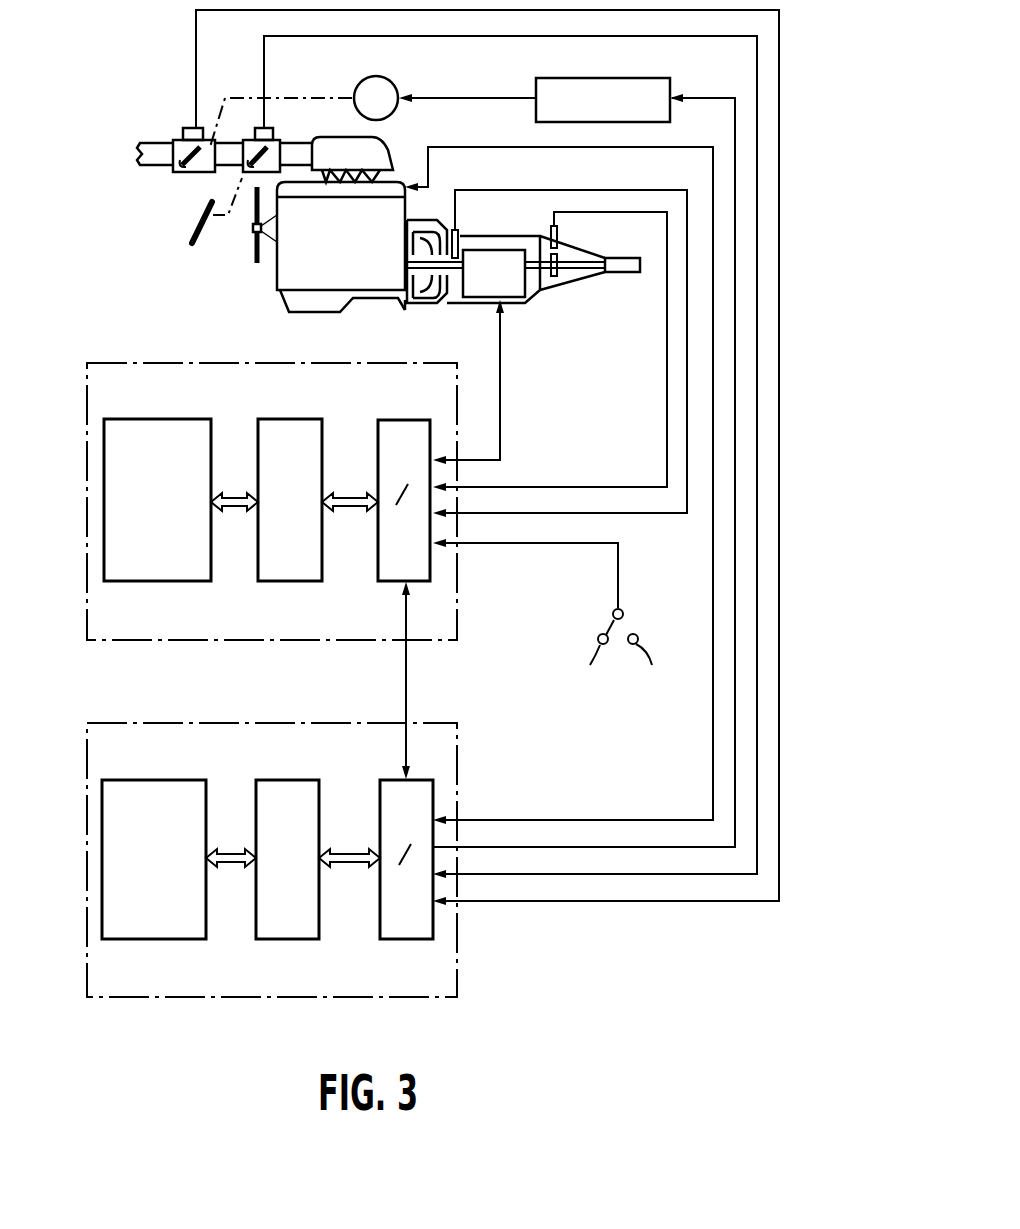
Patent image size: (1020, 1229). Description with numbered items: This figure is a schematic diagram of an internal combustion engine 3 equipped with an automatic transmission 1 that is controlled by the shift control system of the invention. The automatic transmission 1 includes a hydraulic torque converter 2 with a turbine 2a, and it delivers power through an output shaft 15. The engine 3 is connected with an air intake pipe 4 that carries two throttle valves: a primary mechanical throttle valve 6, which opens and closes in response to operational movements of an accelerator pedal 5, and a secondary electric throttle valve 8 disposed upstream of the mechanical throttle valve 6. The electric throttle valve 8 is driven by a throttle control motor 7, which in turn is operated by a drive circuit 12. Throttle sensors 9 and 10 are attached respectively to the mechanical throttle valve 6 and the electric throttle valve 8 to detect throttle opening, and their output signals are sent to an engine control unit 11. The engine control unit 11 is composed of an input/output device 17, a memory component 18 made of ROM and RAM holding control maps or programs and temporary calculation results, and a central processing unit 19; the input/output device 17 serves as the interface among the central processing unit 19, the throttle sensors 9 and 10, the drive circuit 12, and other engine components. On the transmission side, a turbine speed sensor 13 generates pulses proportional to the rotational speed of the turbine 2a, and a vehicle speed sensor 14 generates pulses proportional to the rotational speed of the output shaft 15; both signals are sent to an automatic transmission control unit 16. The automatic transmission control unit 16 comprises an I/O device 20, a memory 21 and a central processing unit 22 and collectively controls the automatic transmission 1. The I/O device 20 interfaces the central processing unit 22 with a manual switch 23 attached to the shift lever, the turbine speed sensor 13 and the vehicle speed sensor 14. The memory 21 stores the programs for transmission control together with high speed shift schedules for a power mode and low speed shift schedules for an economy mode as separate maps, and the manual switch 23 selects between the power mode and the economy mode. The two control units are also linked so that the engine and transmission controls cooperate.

The automatic transmission 1 is at (540, 308).
The hydraulic torque converter 2 is at (425, 306).
The turbine 2a is at (405, 308).
The internal combustion engine 3 is at (277, 275).
The air intake pipe 4 is at (160, 143).
The accelerator pedal 5 is at (182, 235).
The mechanical throttle valve 6 is at (245, 178).
The throttle control motor 7 is at (400, 90).
The electric throttle valve 8 is at (173, 173).
The throttle sensor 9 is at (268, 128).
The throttle sensor 10 is at (190, 128).
The engine control unit 11 is at (309, 860).
The drive circuit 12 is at (662, 79).
The turbine speed sensor 13 is at (460, 240).
The vehicle speed sensor 14 is at (560, 232).
The output shaft 15 is at (628, 272).
The automatic transmission control unit 16 is at (330, 501).
The input/output device 17 is at (393, 780).
The memory component 18 is at (158, 780).
The central processing unit 19 is at (293, 780).
The I/O device 20 is at (395, 420).
The memory 21 is at (160, 419).
The central processing unit 22 is at (282, 419).
The manual switch 23 is at (622, 612).